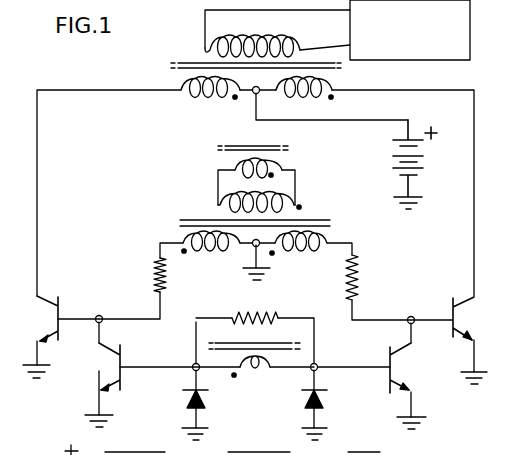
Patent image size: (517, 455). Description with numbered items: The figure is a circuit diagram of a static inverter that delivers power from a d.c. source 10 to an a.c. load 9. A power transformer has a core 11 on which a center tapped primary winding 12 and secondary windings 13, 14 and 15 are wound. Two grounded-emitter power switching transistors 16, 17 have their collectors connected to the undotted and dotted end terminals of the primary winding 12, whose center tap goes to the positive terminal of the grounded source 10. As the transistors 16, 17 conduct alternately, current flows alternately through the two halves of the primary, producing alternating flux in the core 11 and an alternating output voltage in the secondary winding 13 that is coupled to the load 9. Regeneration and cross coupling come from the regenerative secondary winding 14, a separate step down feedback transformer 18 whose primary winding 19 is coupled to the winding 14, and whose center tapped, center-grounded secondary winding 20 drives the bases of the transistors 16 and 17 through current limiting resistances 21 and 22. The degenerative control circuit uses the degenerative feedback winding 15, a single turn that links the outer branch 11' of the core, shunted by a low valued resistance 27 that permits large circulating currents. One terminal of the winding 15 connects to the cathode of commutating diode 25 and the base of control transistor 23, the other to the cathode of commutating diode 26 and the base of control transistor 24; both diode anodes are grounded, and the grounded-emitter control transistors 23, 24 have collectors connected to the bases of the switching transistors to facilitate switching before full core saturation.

The a.c. load 9 is at (470, 20).
The d.c. source 10 is at (393, 160).
The core 11 is at (252, 93).
The outer branch 11' is at (280, 339).
The center tapped primary winding 12 is at (215, 100).
The secondary winding 13 is at (283, 38).
The regenerative secondary winding 14 is at (282, 159).
The degenerative feedback winding 15 is at (254, 379).
The power switching transistor 16 is at (50, 313).
The power switching transistor 17 is at (468, 320).
The step down feedback transformer 18 is at (165, 232).
The primary winding 19 is at (282, 198).
The center tapped secondary winding 20 is at (206, 251).
The current limiting resistance 21 is at (153, 274).
The current limiting resistance 22 is at (359, 282).
The control transistor 23 is at (112, 363).
The control transistor 24 is at (405, 372).
The commutating diode 25 is at (185, 393).
The commutating diode 26 is at (325, 397).
The low valued resistance 27 is at (262, 314).